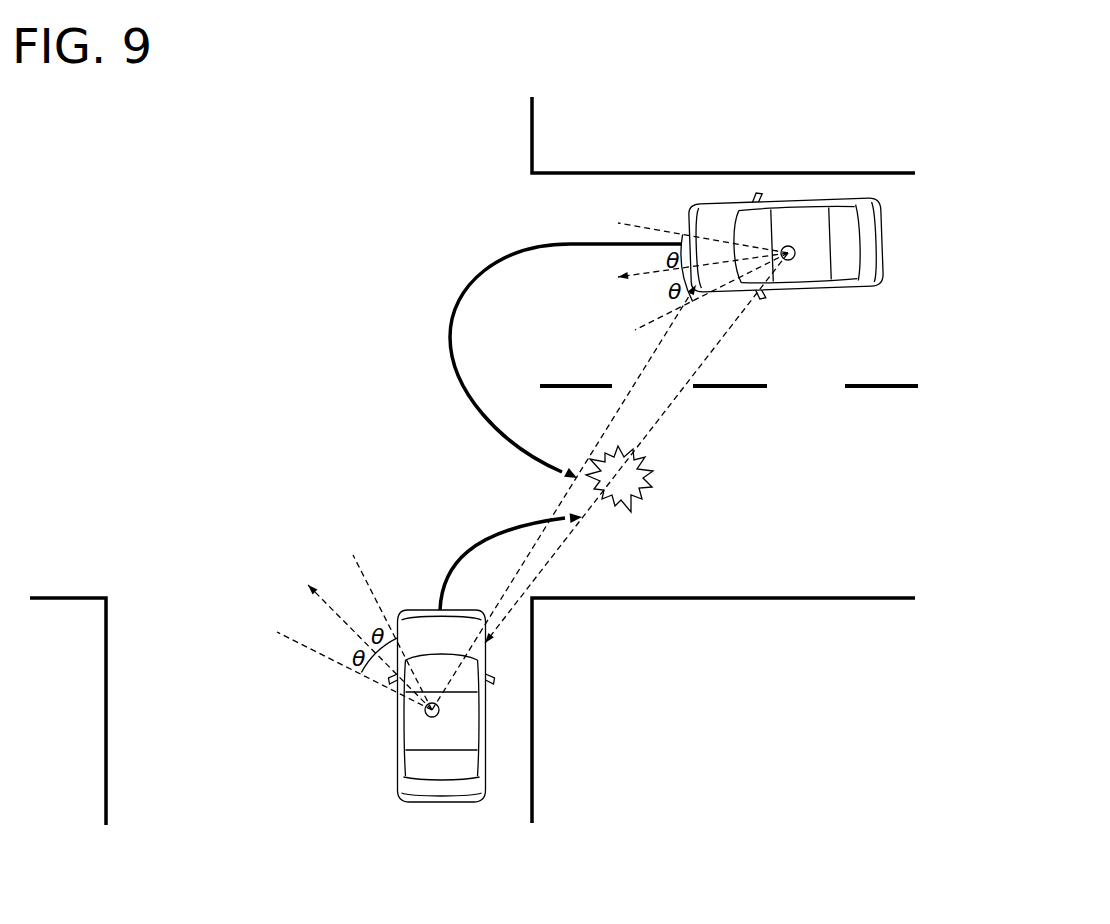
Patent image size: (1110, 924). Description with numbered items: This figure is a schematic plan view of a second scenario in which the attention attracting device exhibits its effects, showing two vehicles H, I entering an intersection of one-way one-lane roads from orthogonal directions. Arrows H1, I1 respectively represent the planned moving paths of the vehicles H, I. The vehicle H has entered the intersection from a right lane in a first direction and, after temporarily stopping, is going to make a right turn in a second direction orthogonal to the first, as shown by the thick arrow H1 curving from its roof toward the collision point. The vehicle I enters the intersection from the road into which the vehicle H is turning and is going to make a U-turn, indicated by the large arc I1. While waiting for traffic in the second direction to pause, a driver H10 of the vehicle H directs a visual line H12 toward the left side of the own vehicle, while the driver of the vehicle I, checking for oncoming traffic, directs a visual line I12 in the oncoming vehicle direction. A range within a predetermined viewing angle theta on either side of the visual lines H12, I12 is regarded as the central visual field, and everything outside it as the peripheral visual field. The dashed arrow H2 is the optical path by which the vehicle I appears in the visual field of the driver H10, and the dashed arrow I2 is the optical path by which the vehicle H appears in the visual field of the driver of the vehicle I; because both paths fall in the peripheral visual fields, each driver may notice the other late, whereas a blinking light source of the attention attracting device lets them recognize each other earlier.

The vehicle H is at (442, 706).
The vehicle I is at (786, 245).
The driver H10 is at (441, 707).
The visual line H12 is at (348, 630).
The visual line I12 is at (652, 272).
The arrow H1 is at (513, 530).
The arrow I1 is at (483, 272).
The arrow H2 is at (627, 400).
The arrow I2 is at (712, 356).